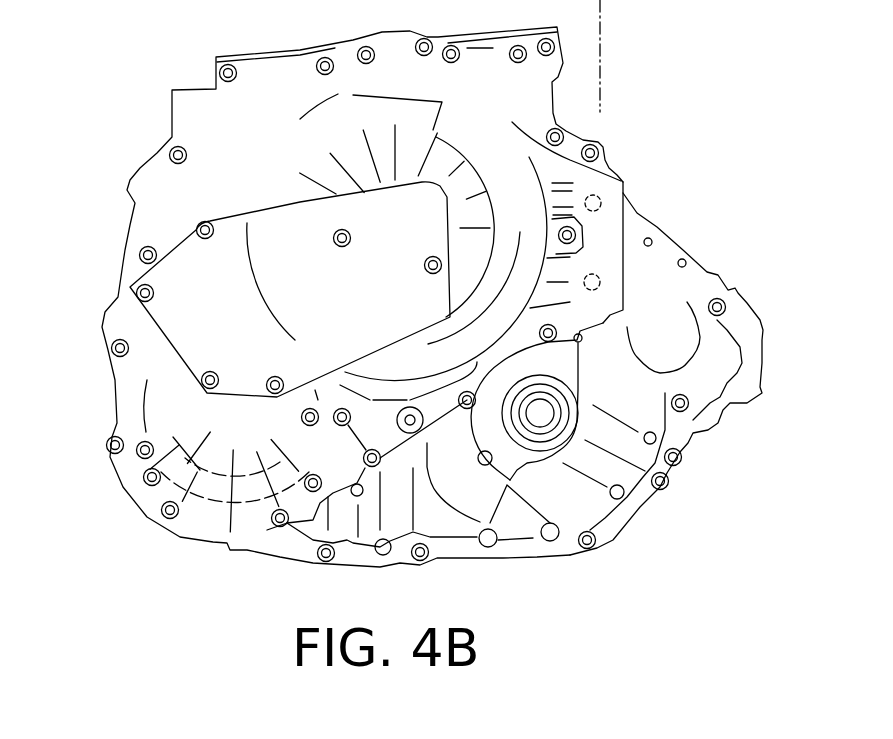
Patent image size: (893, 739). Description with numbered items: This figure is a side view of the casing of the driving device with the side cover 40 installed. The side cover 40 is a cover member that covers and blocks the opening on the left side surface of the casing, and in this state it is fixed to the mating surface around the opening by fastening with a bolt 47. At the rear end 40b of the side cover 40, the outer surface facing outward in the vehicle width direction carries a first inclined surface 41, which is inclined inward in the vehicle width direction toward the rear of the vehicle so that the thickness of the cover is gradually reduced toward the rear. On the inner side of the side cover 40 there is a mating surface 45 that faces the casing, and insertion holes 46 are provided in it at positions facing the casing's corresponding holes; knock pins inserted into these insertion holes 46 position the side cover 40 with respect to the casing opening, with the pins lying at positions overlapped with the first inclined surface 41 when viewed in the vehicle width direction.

The side cover 40 is at (167, 110).
The rear end of the side cover 40b is at (624, 197).
The first inclined surface 41 is at (660, 256).
The mating surface 45 is at (606, 227).
The insertion holes 46 is at (597, 196).
The bolt 47 is at (556, 133).